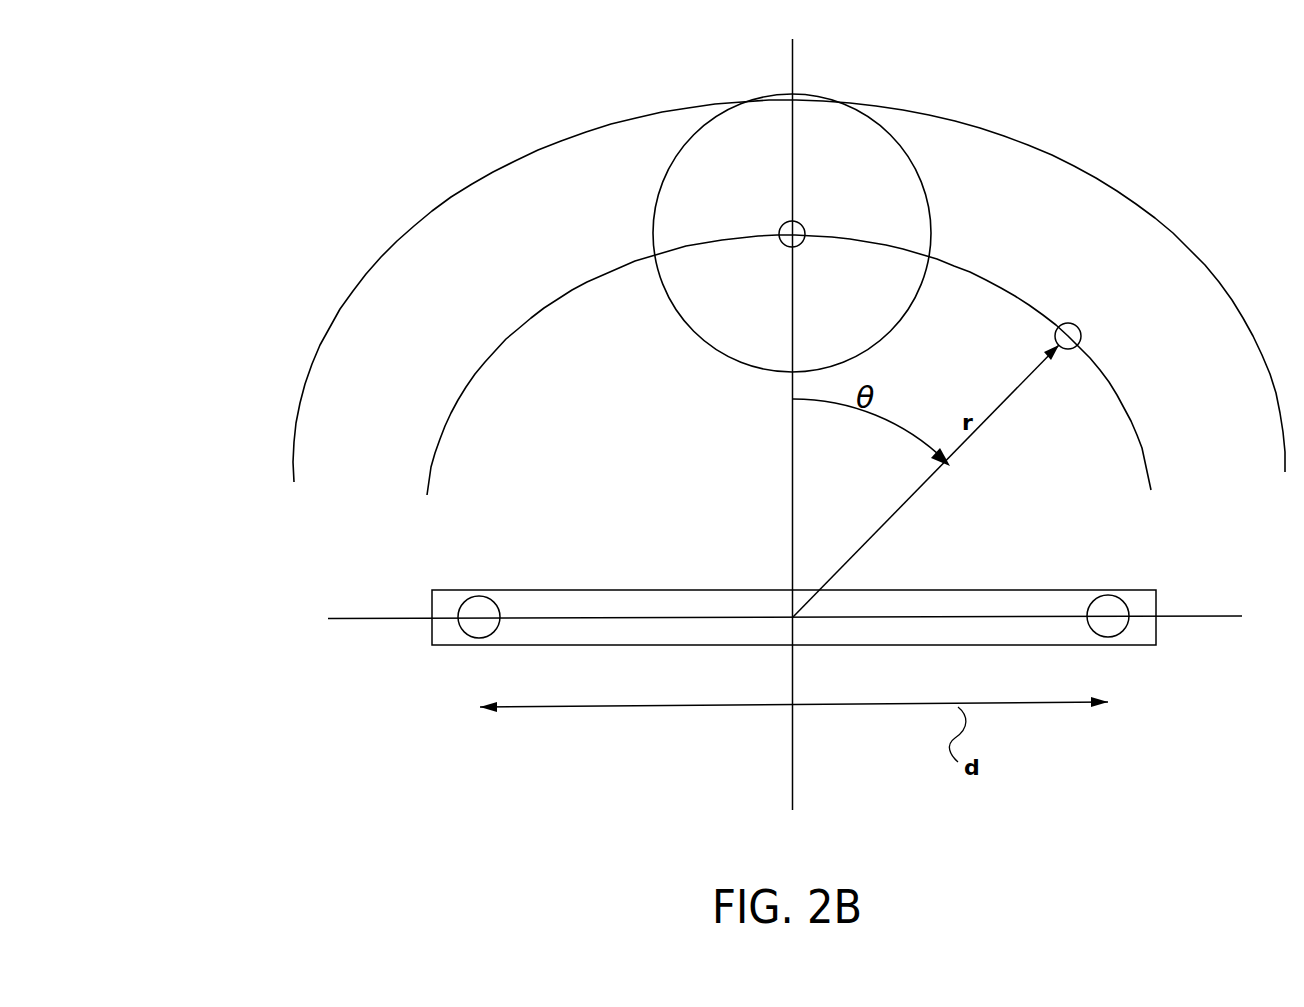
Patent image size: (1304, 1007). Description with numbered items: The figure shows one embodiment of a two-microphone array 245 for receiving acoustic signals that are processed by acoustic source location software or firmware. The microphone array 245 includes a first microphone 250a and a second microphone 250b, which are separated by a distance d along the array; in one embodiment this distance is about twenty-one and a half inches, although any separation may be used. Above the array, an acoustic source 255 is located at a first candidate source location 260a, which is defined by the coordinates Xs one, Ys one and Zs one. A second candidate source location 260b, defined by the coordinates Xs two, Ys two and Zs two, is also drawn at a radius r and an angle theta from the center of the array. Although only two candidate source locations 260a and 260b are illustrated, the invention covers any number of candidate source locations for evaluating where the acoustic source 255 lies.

The 2-microphone array 245 is at (1157, 591).
The microphone 1 250a is at (1105, 595).
The microphone 2 250b is at (480, 597).
The acoustic source 255 is at (805, 234).
The candidate source location 1 260a is at (832, 288).
The candidate source location 2 260b is at (1160, 315).